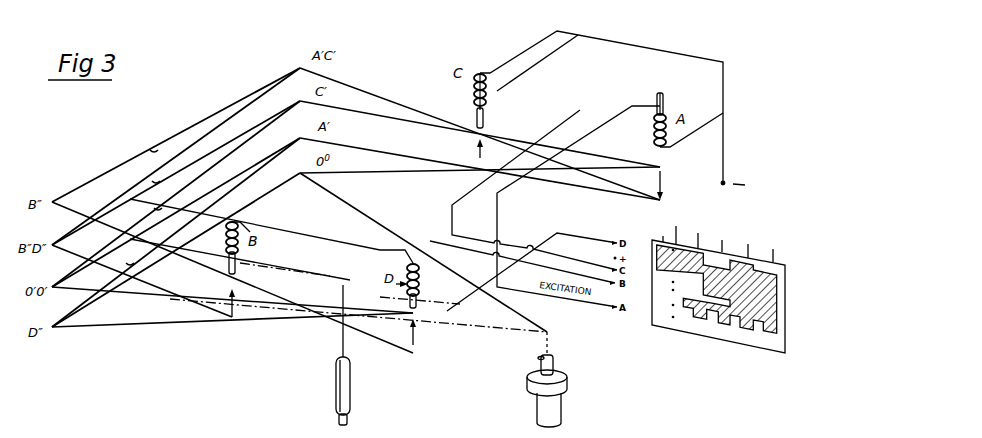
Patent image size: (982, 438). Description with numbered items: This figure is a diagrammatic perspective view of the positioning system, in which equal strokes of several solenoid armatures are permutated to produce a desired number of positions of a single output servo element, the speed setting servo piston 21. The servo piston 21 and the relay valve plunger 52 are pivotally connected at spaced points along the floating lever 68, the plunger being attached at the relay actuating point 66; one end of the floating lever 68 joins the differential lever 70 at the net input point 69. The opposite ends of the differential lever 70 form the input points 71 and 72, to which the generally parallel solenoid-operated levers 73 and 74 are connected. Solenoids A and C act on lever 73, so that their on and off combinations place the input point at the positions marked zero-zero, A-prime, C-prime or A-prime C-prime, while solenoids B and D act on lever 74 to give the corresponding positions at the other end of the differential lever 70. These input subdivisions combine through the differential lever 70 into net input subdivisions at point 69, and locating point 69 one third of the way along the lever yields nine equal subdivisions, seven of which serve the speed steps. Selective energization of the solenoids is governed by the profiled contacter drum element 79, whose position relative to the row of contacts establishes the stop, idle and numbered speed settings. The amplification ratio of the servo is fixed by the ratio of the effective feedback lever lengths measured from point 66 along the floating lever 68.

The speed setting servo piston 21 is at (570, 384).
The relay valve plunger 52 is at (350, 385).
The relay actuating point 66 is at (344, 286).
The floating lever 68 is at (292, 263).
The net input point 69 is at (150, 146).
The differential lever 70 is at (236, 106).
The input point 71 is at (300, 177).
The input point 72 is at (55, 333).
The solenoid-operated lever 73 is at (368, 95).
The solenoid-operated lever 74 is at (150, 330).
The contacter drum element 79 is at (617, 320).